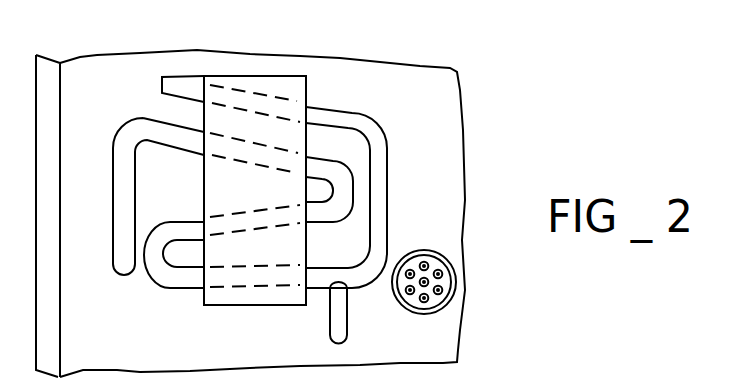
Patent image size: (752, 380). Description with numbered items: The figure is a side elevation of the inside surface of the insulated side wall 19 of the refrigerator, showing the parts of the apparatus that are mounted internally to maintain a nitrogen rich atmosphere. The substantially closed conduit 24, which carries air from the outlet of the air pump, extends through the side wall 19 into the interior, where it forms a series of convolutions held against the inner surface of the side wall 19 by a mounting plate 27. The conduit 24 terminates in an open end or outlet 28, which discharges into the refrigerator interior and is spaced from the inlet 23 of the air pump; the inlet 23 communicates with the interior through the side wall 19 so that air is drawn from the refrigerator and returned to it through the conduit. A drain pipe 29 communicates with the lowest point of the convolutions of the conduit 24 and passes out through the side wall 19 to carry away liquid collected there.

The side wall 19 is at (415, 110).
The inlet 23 is at (432, 263).
The conduit 24 is at (123, 213).
The mounting plate 27 is at (297, 90).
The outlet 28 is at (160, 80).
The drain pipe 29 is at (338, 310).